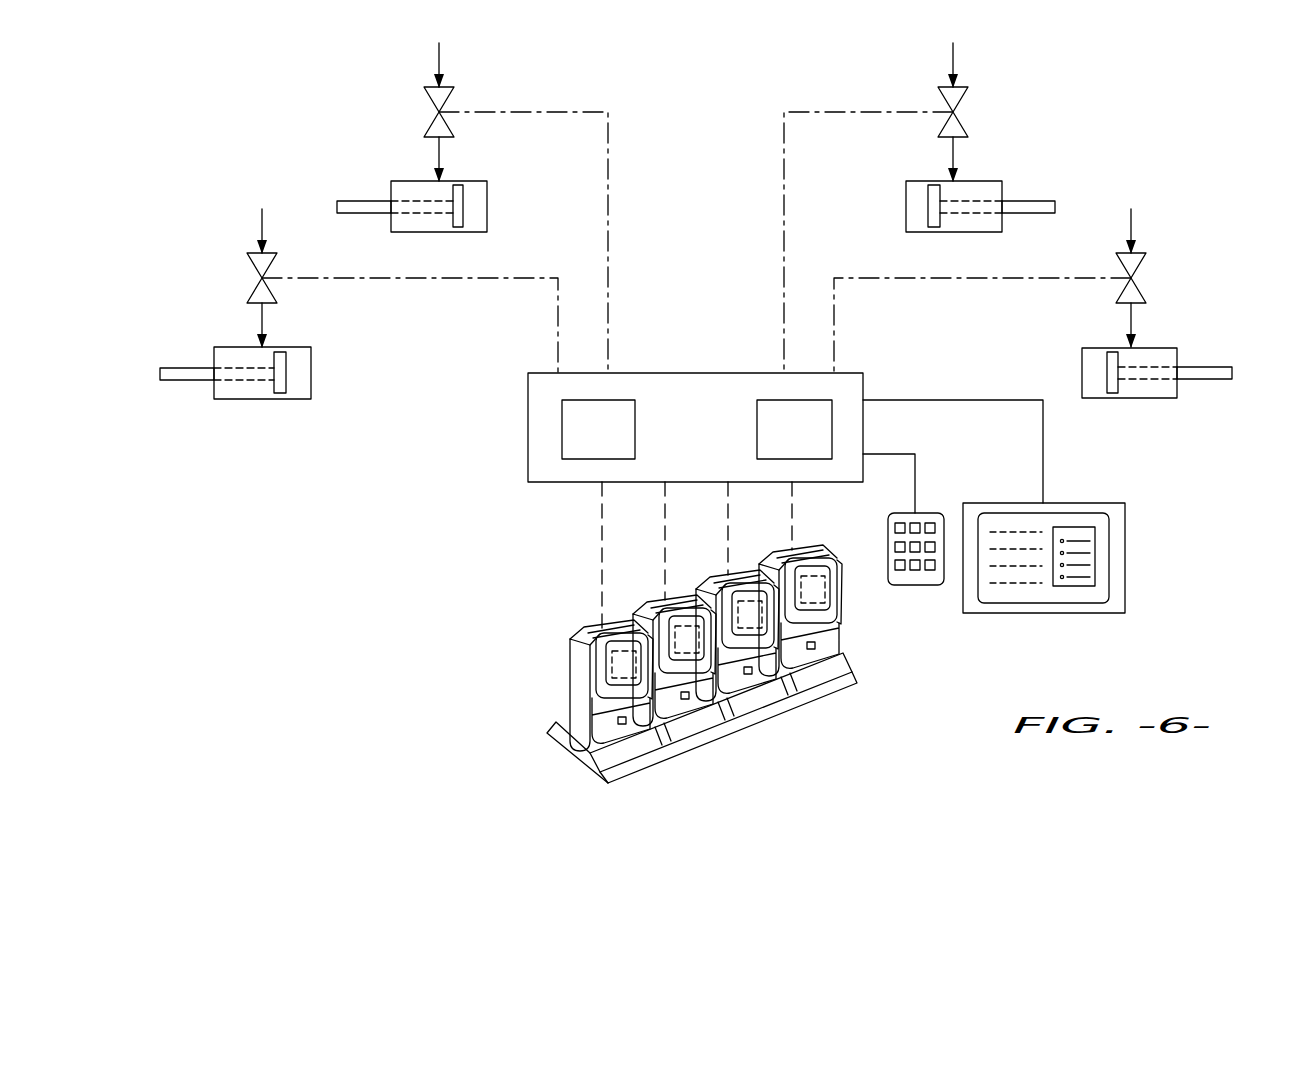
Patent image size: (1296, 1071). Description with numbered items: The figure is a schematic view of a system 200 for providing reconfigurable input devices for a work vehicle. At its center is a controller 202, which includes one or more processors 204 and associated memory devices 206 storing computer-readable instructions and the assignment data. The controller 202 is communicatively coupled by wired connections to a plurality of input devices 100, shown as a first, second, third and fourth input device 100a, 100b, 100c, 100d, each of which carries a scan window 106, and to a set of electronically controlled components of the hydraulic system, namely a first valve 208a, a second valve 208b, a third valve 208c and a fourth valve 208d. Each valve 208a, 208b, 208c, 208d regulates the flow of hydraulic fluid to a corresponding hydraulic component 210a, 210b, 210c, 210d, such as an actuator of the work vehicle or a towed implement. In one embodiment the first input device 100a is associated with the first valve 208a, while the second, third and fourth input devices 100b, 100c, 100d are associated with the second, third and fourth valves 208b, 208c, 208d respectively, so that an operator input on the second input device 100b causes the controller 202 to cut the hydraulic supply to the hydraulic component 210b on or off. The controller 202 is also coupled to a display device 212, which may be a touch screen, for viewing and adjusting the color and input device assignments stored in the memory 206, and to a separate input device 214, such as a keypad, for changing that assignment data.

The input devices 100 is at (698, 656).
The first input device 100a is at (637, 694).
The second input device 100b is at (699, 671).
The third input device 100c is at (764, 646).
The fourth input device 100d is at (832, 619).
The scan window 106 is at (662, 598).
The system 200 is at (1131, 128).
The controller 202 is at (785, 478).
The processor 204 is at (617, 446).
The memory device 206 is at (814, 446).
The first valve 208a is at (255, 272).
The second valve 208b is at (428, 108).
The third valve 208c is at (962, 106).
The fourth valve 208d is at (1140, 270).
The hydraulic component 210a is at (256, 399).
The hydraulic component 210b is at (487, 215).
The hydraulic component 210c is at (906, 213).
The hydraulic component 210d is at (1133, 398).
The display device 212 is at (1125, 546).
The input device 214 is at (930, 512).